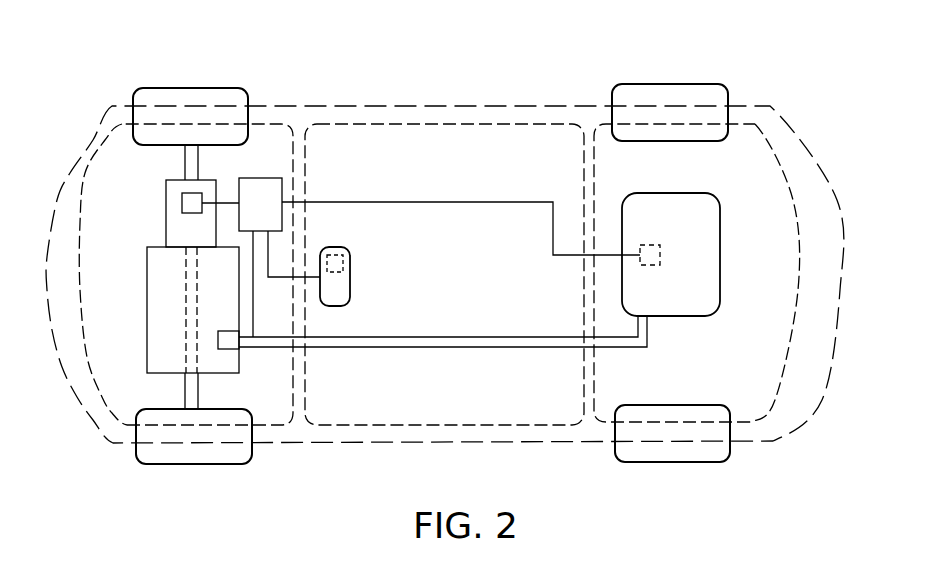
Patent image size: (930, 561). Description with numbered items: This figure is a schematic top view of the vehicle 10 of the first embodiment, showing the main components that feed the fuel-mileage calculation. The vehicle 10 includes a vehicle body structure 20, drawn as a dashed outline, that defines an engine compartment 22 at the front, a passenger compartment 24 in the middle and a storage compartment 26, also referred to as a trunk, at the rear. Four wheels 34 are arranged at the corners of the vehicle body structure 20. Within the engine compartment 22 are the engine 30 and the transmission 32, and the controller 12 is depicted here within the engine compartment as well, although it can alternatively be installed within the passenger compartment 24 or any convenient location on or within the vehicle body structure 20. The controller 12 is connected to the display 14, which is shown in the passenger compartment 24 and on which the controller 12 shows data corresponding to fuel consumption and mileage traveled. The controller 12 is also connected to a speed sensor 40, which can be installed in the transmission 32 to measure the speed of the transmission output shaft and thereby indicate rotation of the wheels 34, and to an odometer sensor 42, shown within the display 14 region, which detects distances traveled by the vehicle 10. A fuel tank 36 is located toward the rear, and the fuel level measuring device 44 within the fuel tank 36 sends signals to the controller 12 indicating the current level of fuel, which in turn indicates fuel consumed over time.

The vehicle 10 is at (281, 53).
The controller 12 is at (262, 190).
The display 14 is at (350, 290).
The vehicle body structure 20 is at (543, 105).
The engine compartment 22 is at (127, 148).
The passenger compartment 24 is at (429, 163).
The storage compartment 26 is at (752, 162).
The engine 30 is at (162, 314).
The transmission 32 is at (178, 226).
The wheels 34 is at (166, 97).
The fuel tank 36 is at (690, 285).
The speed sensor 40 is at (182, 198).
The odometer sensor 42 is at (340, 250).
The fuel level measuring device 44 is at (228, 350).